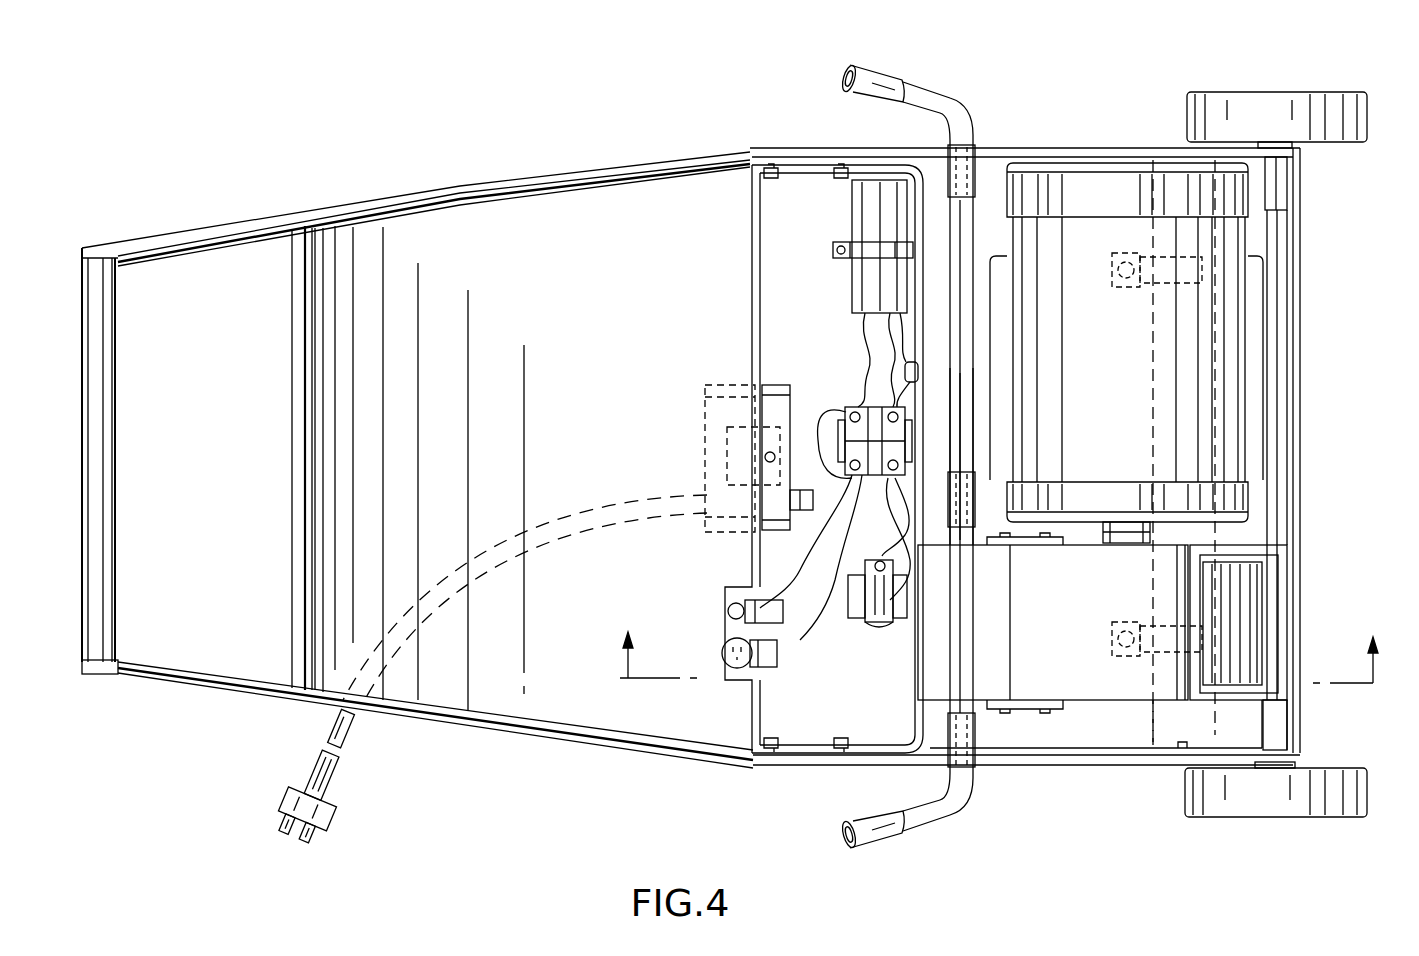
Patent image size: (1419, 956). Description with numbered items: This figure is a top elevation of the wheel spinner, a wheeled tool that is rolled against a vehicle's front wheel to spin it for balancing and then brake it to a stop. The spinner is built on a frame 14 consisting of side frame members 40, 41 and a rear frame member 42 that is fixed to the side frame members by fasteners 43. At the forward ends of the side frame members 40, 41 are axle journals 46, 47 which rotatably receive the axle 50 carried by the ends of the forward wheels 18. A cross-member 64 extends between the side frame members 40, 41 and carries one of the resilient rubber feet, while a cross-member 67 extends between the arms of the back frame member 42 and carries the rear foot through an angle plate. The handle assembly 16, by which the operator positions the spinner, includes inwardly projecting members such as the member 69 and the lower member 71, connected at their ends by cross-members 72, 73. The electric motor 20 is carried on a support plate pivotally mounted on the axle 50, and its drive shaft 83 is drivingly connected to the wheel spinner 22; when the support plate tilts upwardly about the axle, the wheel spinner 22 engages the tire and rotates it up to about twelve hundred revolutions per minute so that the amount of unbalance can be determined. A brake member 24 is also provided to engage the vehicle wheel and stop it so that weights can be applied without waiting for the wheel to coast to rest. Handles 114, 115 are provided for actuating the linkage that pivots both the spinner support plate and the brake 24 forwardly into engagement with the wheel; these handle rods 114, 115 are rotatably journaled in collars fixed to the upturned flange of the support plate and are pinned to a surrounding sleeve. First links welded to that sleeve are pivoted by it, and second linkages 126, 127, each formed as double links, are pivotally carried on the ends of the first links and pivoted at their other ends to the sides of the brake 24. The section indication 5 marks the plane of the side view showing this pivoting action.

The frame 14 is at (1072, 772).
The handle assembly 16 is at (474, 745).
The forward wheels 18 is at (1302, 110).
The motor 20 is at (1185, 334).
The wheel spinner 22 is at (1240, 585).
The brake member 24 is at (1096, 751).
The side frame member 40 is at (1070, 155).
The side frame member 41 is at (1040, 762).
The rear frame member 42 is at (915, 724).
The fasteners 43 is at (773, 750).
The axle journal 46 is at (1278, 180).
The axle journal 47 is at (1275, 737).
The axle 50 is at (1283, 400).
The cross-member 64 is at (1167, 728).
The cross-member 67 is at (750, 248).
The inwardly projecting member 69 is at (487, 192).
The lower rail 71 is at (540, 730).
The cross-member 72 is at (103, 412).
The cross-member 73 is at (295, 495).
The drive shaft 83 is at (1148, 538).
The handle rod 114 is at (927, 95).
The handle rod 115 is at (925, 815).
The second linkage 126 is at (1028, 542).
The second linkage 127 is at (1020, 707).
The section line 5- 5 is at (1000, 645).